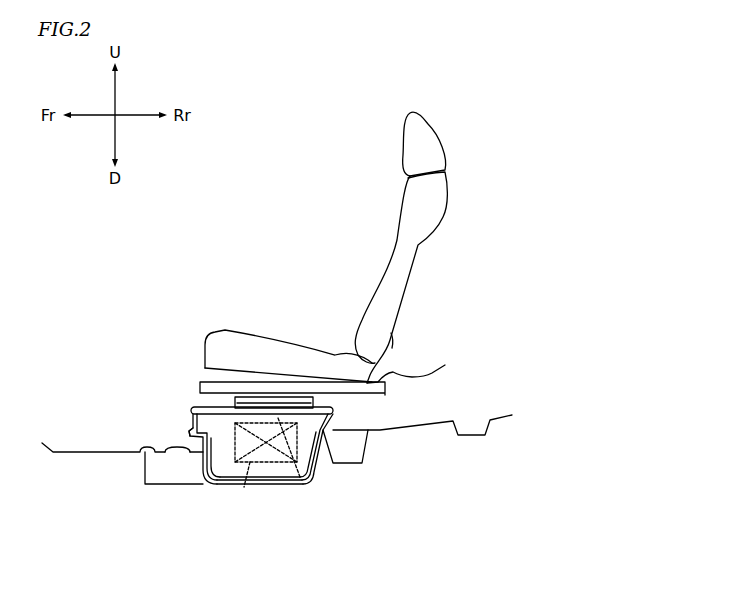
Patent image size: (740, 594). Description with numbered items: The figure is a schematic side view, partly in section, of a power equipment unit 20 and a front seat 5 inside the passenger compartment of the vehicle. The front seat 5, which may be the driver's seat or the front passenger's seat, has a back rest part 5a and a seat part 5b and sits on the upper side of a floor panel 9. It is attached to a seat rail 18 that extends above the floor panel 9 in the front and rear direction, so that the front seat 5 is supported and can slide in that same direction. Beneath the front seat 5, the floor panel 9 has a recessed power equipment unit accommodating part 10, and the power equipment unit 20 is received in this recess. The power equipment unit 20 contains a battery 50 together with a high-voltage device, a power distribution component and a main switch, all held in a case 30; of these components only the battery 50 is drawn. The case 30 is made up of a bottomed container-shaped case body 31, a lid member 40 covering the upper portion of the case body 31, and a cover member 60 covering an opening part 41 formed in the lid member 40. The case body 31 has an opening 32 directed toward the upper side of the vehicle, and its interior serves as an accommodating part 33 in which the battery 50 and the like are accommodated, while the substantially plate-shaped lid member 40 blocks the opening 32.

The front seat 5 is at (363, 247).
The back rest part 5a is at (398, 273).
The seat part 5b is at (225, 337).
The floor panel 9 is at (497, 417).
The power equipment unit accommodating part 10 is at (235, 488).
The seat rail 18 is at (445, 365).
The power equipment unit 20 is at (190, 433).
The case 30 is at (252, 445).
The case body 31 is at (275, 487).
The opening 32 is at (188, 425).
The accommodating part 33 is at (220, 487).
The lid member 40 is at (193, 410).
The opening part 41 is at (298, 487).
The battery 50 is at (250, 487).
The cover member 60 is at (265, 396).